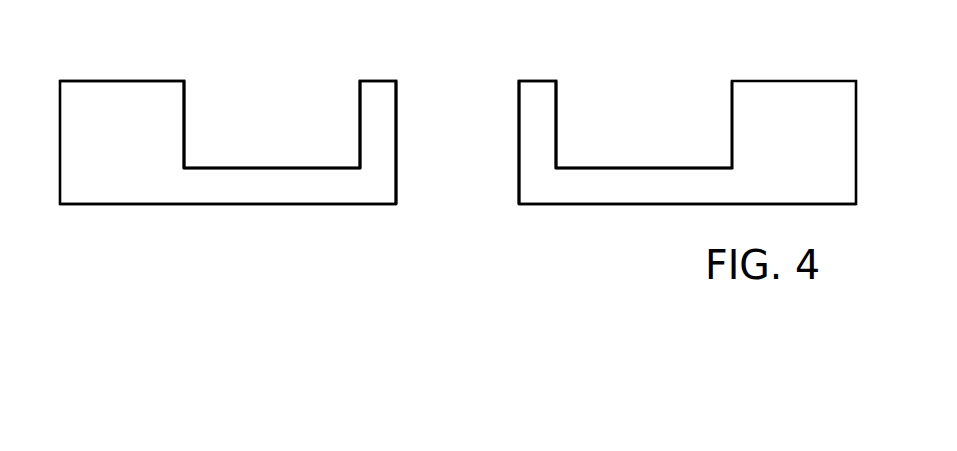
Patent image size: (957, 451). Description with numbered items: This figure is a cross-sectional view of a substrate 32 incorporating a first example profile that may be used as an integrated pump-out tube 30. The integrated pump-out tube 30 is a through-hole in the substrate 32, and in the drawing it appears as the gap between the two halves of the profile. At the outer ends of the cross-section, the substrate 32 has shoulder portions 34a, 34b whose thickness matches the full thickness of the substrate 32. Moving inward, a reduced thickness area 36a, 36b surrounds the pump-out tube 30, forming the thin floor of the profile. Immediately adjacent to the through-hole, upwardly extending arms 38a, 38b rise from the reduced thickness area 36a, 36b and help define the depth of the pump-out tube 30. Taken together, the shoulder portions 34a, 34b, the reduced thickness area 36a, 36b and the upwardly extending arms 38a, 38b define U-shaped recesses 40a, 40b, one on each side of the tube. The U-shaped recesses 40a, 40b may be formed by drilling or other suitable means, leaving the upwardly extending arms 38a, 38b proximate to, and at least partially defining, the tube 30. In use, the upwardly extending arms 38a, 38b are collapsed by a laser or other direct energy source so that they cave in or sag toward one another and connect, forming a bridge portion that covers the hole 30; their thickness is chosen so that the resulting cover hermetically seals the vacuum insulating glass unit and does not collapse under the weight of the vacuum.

The integrated pump-out tube 30 is at (463, 142).
The substrate 32 is at (110, 81).
The shoulder portion 34a is at (95, 134).
The shoulder portion 34b is at (768, 104).
The reduced thickness area 36a is at (323, 190).
The reduced thickness area 36b is at (673, 191).
The upwardly extending arm 38a is at (378, 105).
The upwardly extending arm 38b is at (533, 105).
The U-shaped recess 40a is at (283, 140).
The U-shaped recess 40b is at (663, 140).